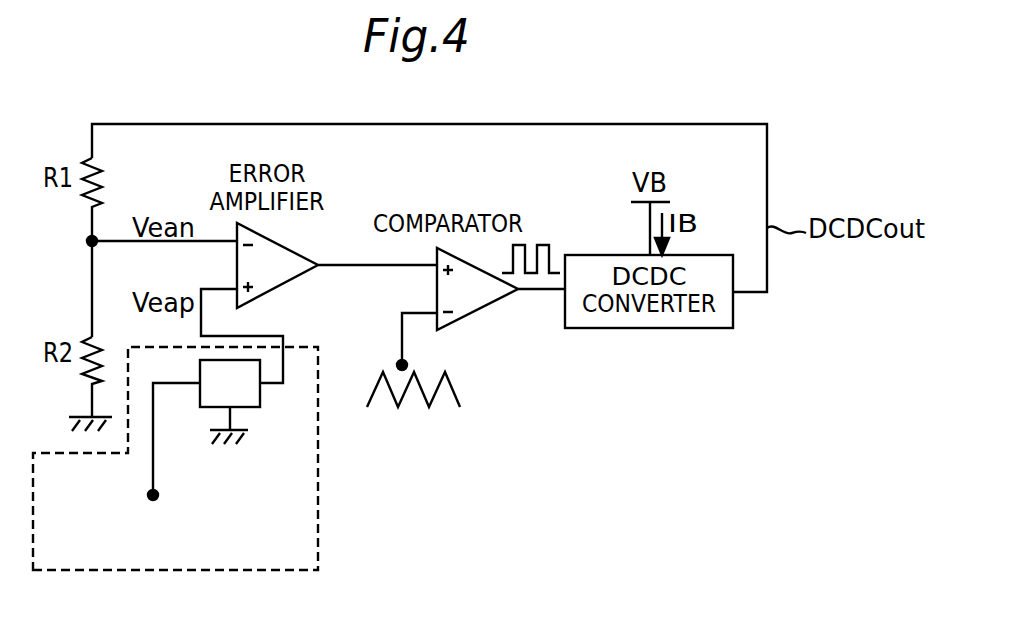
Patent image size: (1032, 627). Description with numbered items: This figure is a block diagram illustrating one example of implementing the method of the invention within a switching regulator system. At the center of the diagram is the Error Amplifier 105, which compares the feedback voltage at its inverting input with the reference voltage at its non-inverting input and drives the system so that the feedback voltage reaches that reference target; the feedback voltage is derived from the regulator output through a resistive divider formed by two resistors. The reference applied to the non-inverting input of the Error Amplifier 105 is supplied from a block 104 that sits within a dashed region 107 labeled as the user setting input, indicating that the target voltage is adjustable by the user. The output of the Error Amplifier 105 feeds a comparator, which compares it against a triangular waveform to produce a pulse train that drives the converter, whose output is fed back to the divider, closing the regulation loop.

The setting unit 104 is at (260, 396).
The error amplifier 105 is at (283, 286).
The user setting input 107 is at (318, 498).